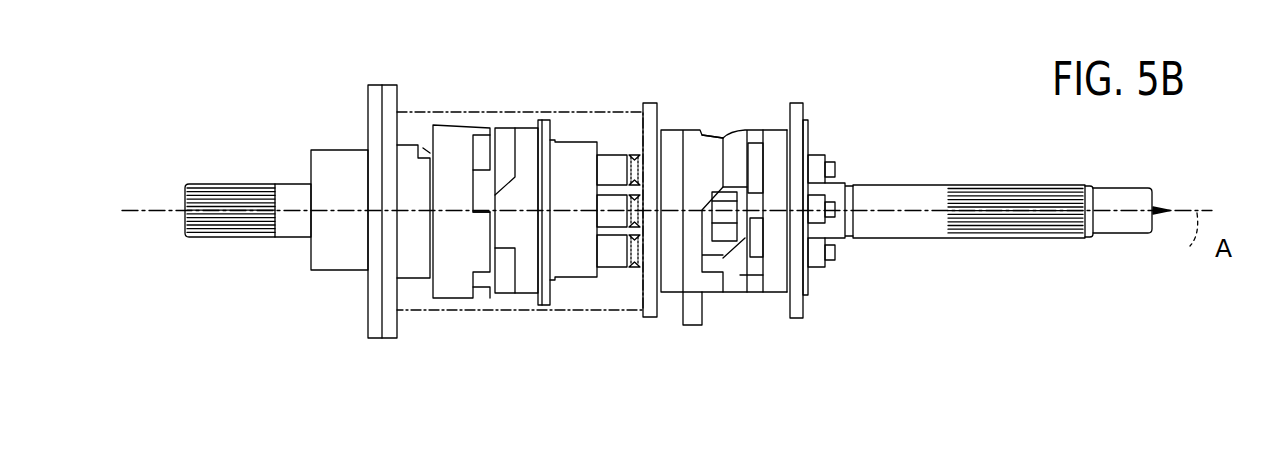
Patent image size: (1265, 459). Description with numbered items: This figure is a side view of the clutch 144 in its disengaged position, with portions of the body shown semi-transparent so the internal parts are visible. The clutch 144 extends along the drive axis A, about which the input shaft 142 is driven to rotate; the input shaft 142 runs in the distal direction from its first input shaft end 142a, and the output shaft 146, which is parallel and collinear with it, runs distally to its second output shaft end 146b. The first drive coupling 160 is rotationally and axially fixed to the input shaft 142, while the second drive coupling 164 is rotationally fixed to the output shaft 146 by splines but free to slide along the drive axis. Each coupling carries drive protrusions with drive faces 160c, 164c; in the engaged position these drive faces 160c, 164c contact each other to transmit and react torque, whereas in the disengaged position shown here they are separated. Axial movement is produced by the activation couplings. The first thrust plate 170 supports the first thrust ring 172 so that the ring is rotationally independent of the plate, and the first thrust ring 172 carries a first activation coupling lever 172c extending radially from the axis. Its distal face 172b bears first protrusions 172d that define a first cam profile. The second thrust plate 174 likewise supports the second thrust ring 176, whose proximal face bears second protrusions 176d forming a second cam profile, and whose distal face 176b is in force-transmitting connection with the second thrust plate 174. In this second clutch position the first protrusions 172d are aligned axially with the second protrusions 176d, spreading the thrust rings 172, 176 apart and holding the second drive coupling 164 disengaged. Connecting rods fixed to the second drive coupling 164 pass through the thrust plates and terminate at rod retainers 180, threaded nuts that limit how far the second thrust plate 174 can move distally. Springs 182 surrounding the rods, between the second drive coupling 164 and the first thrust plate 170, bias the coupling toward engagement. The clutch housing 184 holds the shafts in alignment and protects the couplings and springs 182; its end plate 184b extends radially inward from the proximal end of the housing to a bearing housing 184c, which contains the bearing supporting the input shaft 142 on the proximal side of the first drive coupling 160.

The input shaft 142 is at (290, 200).
The first input shaft end 142a is at (182, 200).
The clutch 144 is at (1005, 292).
The output shaft 146 is at (920, 198).
The second output shaft end 146b is at (1125, 200).
The first drive coupling 160 is at (453, 145).
The drive faces 160c is at (487, 213).
The second drive coupling 164 is at (527, 277).
The drive faces 164c is at (507, 140).
The first thrust plate 170 is at (653, 103).
The first thrust ring 172 is at (677, 128).
The distal face 172b is at (705, 208).
The first activation coupling lever 172c is at (692, 320).
The first protrusions 172d is at (712, 148).
The second thrust plate 174 is at (798, 103).
The second thrust ring 176 is at (777, 128).
The distal face 176b is at (743, 198).
The second protrusions 176d is at (740, 277).
The rod retainers 180 is at (817, 267).
The springs 182 is at (623, 258).
The clutch housing 184 is at (563, 110).
The end plate 184b is at (377, 93).
The bearing housing 184c is at (335, 168).